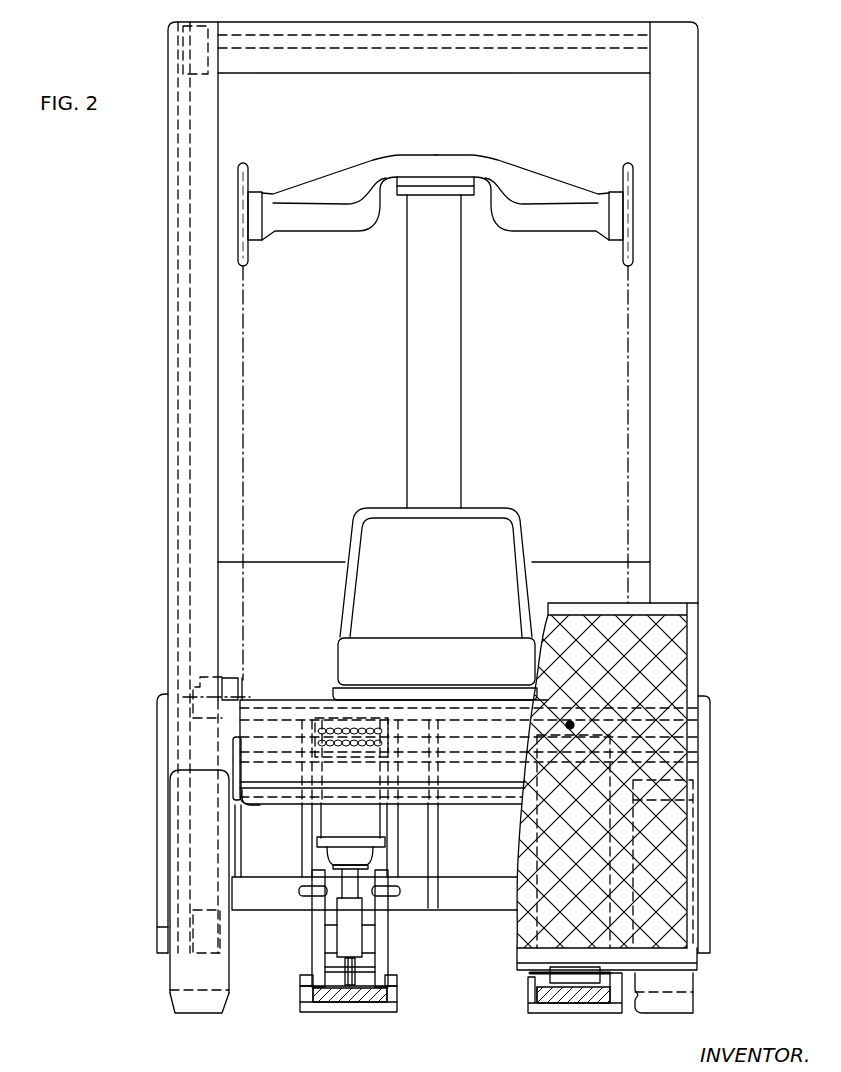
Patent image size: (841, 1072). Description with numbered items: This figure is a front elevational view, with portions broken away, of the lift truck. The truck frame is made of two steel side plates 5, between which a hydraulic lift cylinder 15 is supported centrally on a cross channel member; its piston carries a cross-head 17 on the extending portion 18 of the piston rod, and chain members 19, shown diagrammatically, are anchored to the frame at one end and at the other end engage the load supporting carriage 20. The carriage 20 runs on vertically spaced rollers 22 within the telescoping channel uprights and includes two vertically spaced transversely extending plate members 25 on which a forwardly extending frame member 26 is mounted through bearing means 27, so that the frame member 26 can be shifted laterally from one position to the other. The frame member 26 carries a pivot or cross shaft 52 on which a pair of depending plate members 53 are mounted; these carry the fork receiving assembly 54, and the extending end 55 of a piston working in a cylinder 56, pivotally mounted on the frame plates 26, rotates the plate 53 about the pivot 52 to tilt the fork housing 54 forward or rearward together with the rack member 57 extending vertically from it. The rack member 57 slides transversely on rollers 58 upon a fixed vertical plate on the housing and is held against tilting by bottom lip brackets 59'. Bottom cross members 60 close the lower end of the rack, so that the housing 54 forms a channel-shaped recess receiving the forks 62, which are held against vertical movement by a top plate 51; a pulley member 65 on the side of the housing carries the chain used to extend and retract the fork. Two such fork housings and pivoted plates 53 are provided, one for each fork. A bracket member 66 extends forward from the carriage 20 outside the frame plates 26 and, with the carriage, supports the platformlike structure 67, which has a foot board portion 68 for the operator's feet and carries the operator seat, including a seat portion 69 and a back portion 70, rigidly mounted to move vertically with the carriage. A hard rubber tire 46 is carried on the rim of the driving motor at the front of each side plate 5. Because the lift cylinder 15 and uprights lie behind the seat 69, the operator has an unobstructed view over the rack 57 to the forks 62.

The side plates 5 is at (164, 798).
The hydraulic lift cylinder 15 is at (418, 362).
The cross-head 17 is at (534, 218).
The extending portion of the piston rod 18 is at (430, 176).
The chain members 19 is at (246, 350).
The load supporting carriage 20 is at (230, 688).
The rollers 22 is at (200, 681).
The transversely extending plate members 25 is at (234, 760).
The frame member 26 is at (307, 852).
The bearing means 27 is at (352, 720).
The hard rubber tire 46 is at (183, 998).
The top plate 51 is at (547, 977).
The pivot or cross shaft 52 is at (298, 890).
The depending plate members 53 is at (316, 942).
The fork receiving assembly 54 is at (300, 981).
The extending end of piston 55 is at (356, 935).
The cylinder 56 is at (333, 816).
The rack member 57 is at (692, 665).
The rollers 58 is at (568, 722).
The bottom lip brackets 59' is at (531, 981).
The bottom cross members 60 is at (366, 1008).
The forks 62 is at (343, 988).
The pulley member 65 is at (347, 986).
The bracket member 66 is at (435, 870).
The platformlike structure 67 is at (303, 702).
The foot board portion 68 is at (257, 803).
The seat portion 69 is at (473, 650).
The back portion 70 is at (500, 540).